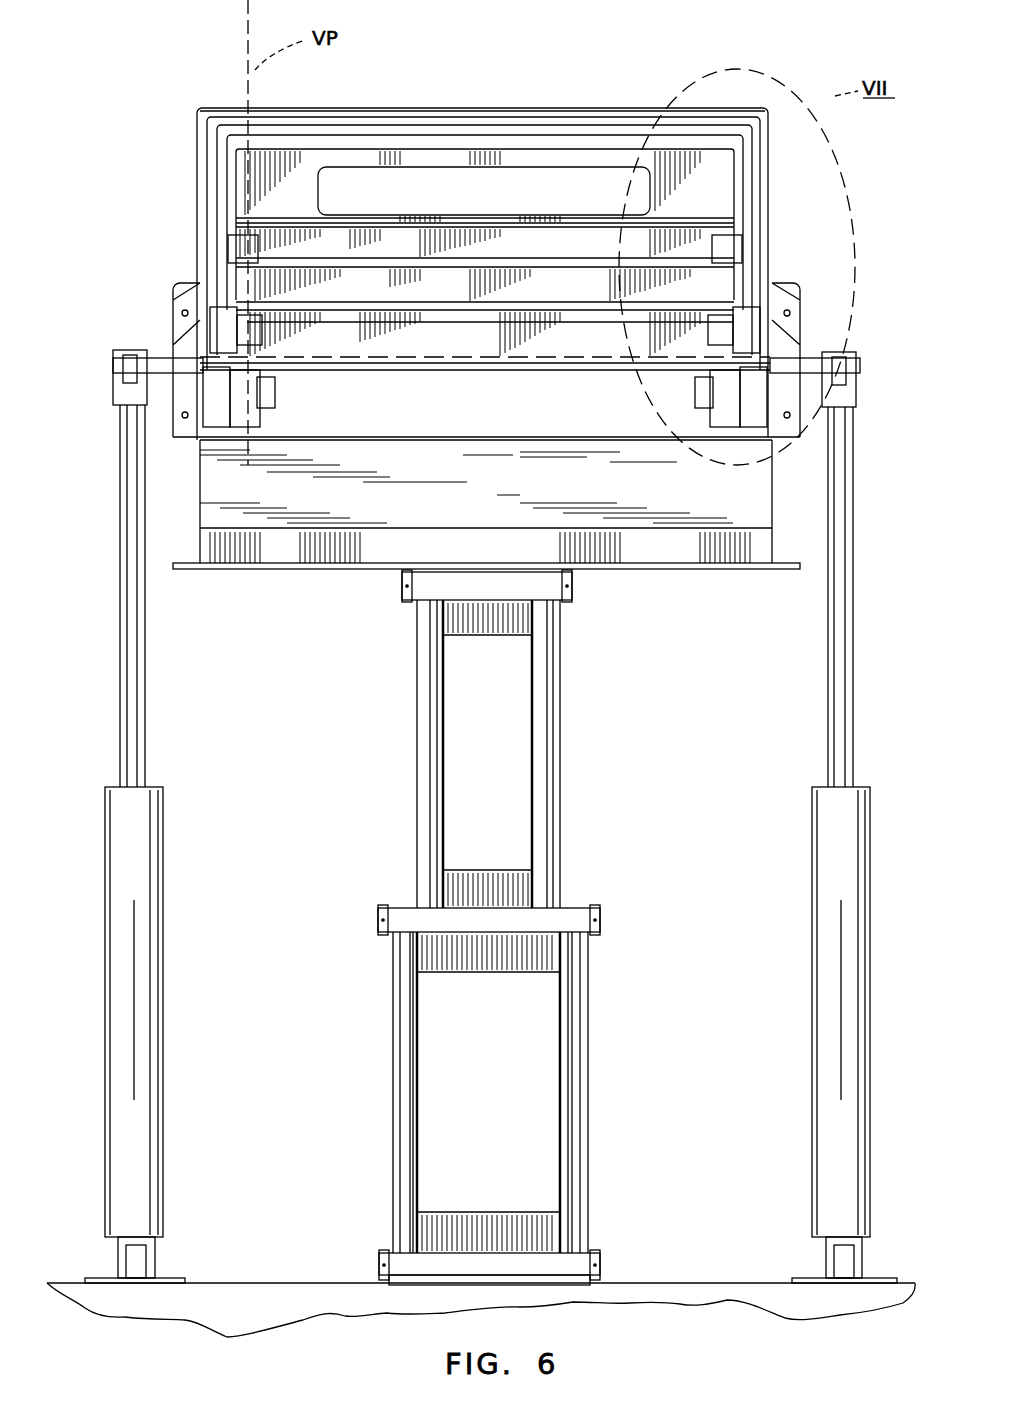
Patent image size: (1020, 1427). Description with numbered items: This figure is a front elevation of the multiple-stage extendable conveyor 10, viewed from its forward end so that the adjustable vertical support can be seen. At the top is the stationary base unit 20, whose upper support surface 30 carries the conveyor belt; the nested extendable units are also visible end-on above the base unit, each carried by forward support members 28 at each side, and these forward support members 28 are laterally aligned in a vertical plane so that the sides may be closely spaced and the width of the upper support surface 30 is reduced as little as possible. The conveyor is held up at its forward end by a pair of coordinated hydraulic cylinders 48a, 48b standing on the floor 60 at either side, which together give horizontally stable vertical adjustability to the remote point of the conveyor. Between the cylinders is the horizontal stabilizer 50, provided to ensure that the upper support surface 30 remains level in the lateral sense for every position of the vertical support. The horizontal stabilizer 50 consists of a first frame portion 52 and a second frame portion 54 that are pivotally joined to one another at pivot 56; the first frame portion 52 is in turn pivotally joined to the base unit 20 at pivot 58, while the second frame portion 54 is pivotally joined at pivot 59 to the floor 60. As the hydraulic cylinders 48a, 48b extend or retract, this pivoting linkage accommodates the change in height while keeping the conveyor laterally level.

The extendable conveyor 10 is at (188, 137).
The stationary base unit 20 is at (300, 570).
The forward support members 28 is at (235, 268).
The upper support surface 30 is at (517, 150).
The hydraulic cylinder 48a is at (147, 733).
The hydraulic cylinder 48b is at (822, 733).
The horizontal stabilizer 50 is at (410, 838).
The first frame portion 52 is at (560, 787).
The second frame portion 54 is at (588, 1008).
The pivot joint 56 is at (600, 920).
The pivot joint 58 is at (573, 582).
The pivot joint 59 is at (600, 1268).
The floor 60 is at (267, 1283).